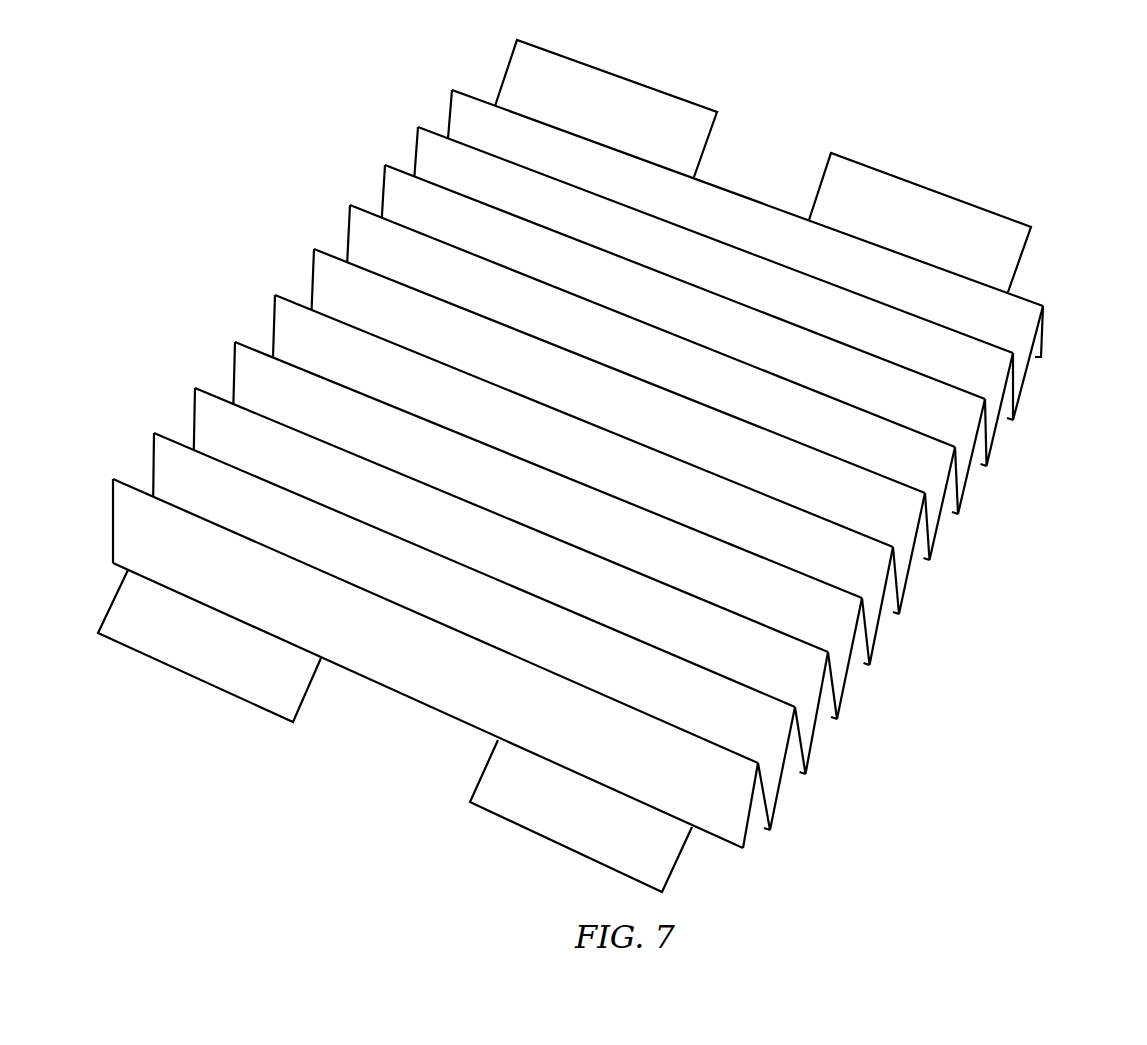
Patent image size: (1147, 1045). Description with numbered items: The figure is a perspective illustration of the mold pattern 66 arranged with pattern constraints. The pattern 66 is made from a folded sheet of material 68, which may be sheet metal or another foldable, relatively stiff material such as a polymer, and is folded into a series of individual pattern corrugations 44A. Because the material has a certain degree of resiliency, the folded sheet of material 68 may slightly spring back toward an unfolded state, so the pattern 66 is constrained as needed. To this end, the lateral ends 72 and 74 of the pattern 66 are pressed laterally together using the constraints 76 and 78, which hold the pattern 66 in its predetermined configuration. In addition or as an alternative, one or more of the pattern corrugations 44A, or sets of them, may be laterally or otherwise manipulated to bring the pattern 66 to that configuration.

The pattern 66 is at (622, 460).
The sheet of material 68 is at (1022, 420).
The lateral end 72 is at (430, 712).
The lateral end 74 is at (748, 196).
The constraint 76 is at (192, 681).
The constraint 78 is at (678, 92).
The pattern corrugation 44A is at (341, 202).